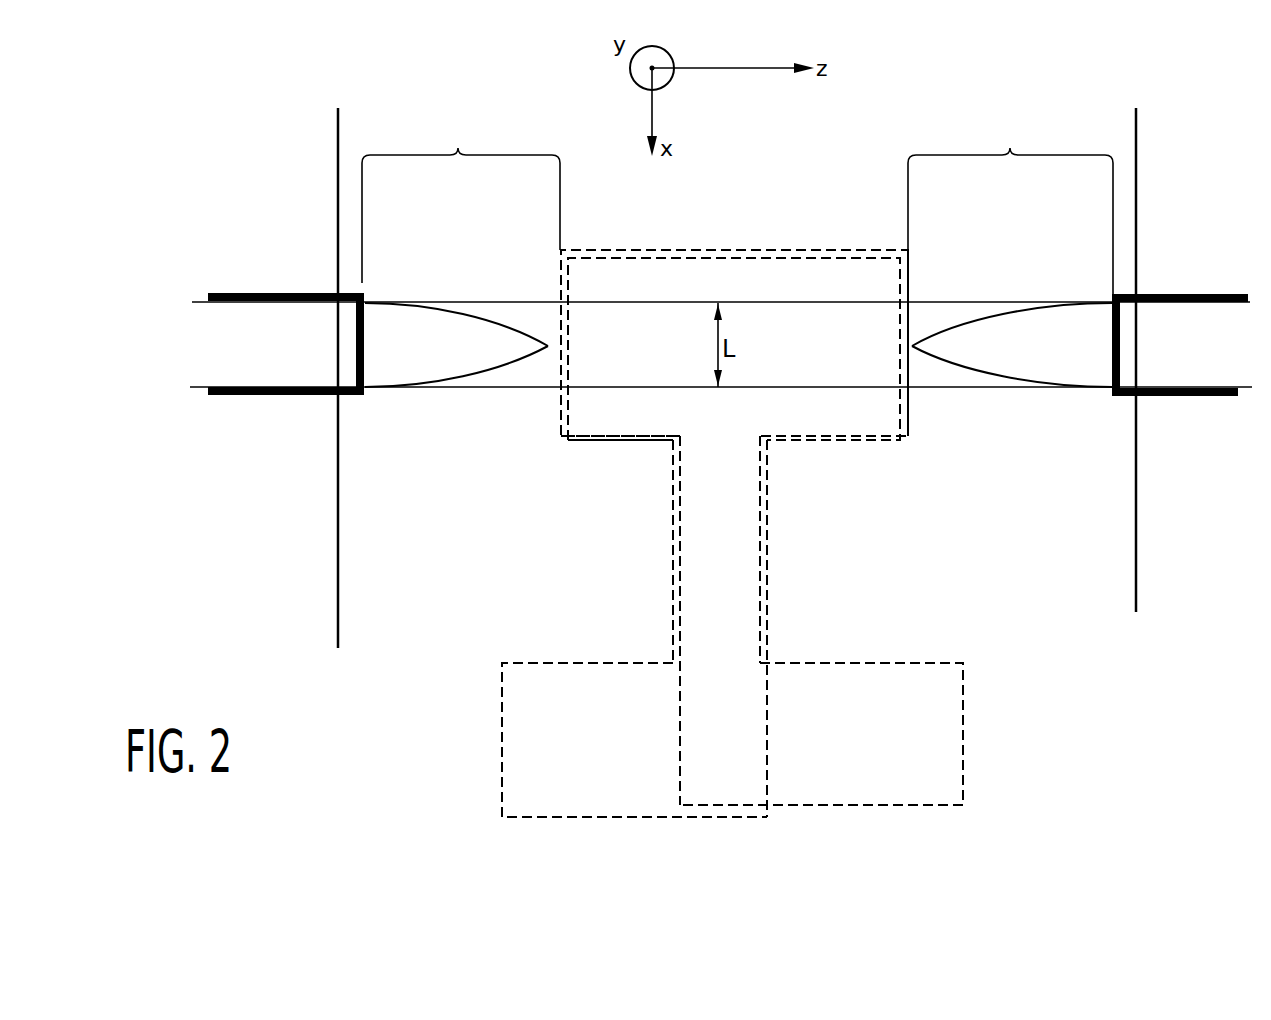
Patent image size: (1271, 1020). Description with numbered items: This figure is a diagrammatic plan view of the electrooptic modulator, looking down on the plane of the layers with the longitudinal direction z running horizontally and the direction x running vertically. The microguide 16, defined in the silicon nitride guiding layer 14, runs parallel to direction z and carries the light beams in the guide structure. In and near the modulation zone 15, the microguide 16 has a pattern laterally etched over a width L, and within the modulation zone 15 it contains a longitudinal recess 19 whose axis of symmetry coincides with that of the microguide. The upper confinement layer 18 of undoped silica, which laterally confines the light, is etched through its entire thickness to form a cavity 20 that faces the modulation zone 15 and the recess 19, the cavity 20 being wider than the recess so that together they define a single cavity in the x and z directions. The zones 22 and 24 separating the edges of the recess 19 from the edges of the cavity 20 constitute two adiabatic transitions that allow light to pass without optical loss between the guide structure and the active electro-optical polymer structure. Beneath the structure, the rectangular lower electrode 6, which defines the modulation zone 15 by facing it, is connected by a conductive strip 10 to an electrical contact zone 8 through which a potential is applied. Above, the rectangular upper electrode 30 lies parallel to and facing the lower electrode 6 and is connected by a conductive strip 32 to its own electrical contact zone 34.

The lower electrode 6 is at (607, 432).
The electrical contact zone 8 is at (963, 748).
The conductive strip 10 is at (674, 588).
The guiding layer 14 is at (1028, 357).
The modulation zone 15 is at (758, 238).
The microguide 16 is at (922, 286).
The upper confinement layer 18 is at (1202, 330).
The longitudinal recess 19 is at (522, 330).
The cavity 20 is at (366, 299).
The adiabatic transition zone 22 is at (461, 201).
The adiabatic transition zone 24 is at (1010, 209).
The upper electrode 30 is at (673, 250).
The conductive strip 32 is at (768, 546).
The electrical contact zone 34 is at (543, 817).